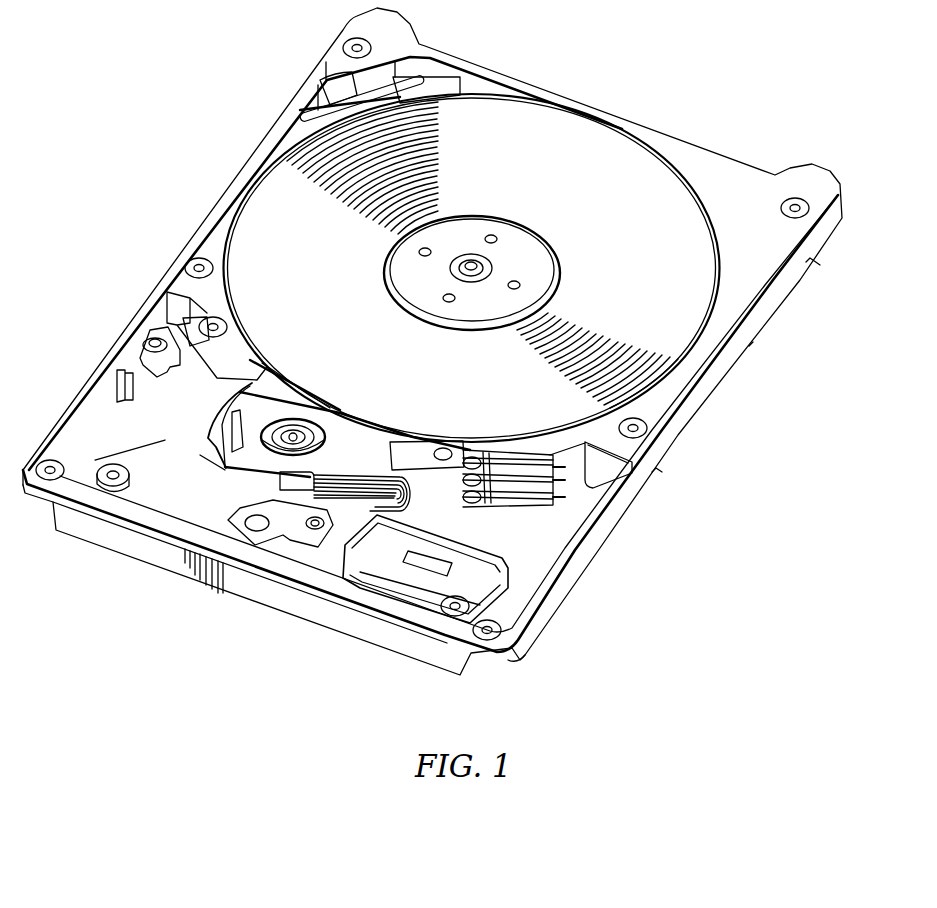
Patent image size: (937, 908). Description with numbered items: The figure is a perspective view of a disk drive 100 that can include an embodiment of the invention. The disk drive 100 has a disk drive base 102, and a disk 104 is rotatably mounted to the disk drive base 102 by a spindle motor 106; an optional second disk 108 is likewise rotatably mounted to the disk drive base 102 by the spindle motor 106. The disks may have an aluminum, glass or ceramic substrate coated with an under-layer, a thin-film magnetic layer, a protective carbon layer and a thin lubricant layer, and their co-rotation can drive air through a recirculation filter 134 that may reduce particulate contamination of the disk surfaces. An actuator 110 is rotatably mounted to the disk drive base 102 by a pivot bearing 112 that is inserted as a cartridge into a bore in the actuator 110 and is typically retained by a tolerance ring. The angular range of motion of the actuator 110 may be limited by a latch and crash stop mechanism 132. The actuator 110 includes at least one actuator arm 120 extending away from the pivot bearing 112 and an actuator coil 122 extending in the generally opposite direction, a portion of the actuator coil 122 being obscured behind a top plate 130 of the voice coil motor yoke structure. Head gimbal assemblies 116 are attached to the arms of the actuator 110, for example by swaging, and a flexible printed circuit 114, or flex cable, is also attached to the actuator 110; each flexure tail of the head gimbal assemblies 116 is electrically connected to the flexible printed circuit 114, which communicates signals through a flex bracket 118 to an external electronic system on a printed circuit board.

The disk drive 100 is at (641, 72).
The disk drive base 102 is at (718, 161).
The disk 104 is at (328, 279).
The spindle motor 106 is at (477, 232).
The second disk 108 is at (568, 446).
The actuator 110 is at (347, 433).
The pivot bearing 112 is at (282, 436).
The flexible printed circuit 114 is at (357, 480).
The head gimbal assemblies 116 is at (500, 482).
The flex bracket 118 is at (407, 570).
The actuator arm 120 is at (421, 452).
The actuator coil 122 is at (208, 430).
The top plate 130 is at (193, 471).
The latch and crash stop mechanism 132 is at (140, 358).
The recirculation filter 134 is at (353, 100).